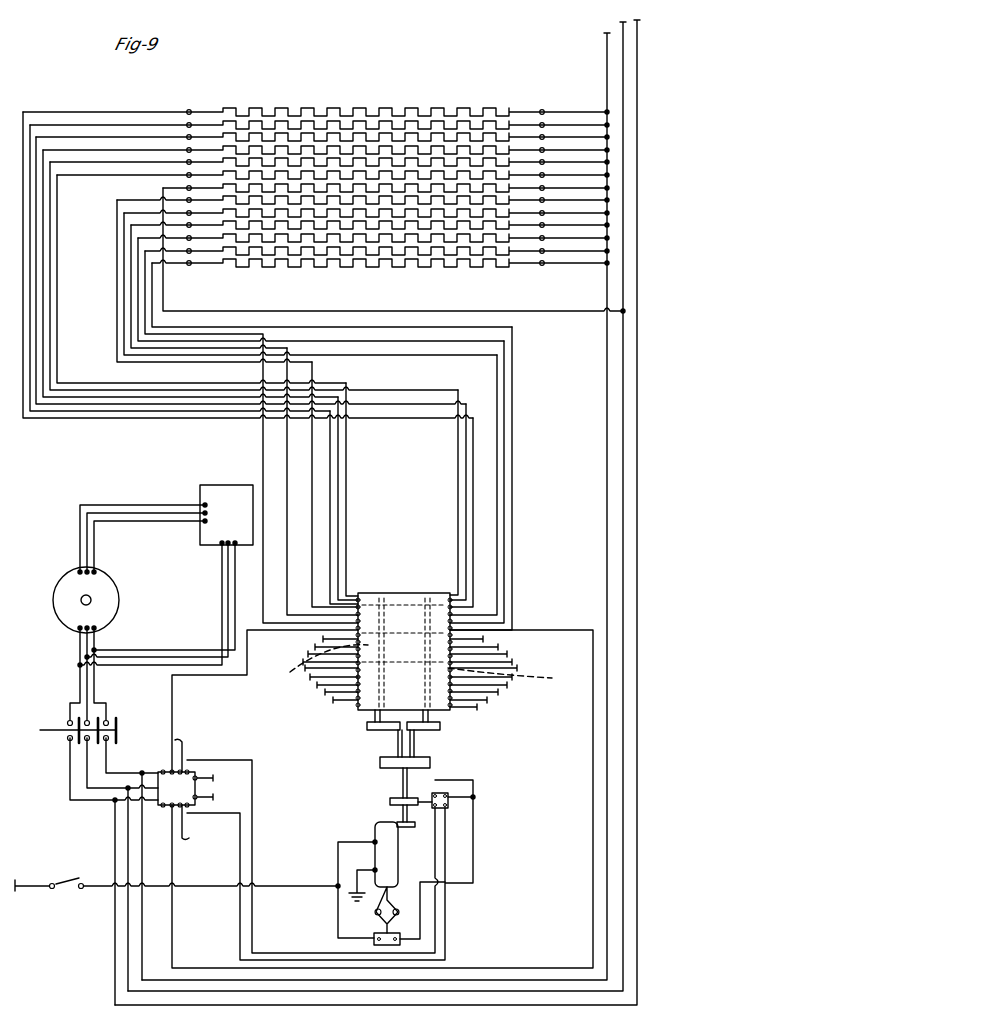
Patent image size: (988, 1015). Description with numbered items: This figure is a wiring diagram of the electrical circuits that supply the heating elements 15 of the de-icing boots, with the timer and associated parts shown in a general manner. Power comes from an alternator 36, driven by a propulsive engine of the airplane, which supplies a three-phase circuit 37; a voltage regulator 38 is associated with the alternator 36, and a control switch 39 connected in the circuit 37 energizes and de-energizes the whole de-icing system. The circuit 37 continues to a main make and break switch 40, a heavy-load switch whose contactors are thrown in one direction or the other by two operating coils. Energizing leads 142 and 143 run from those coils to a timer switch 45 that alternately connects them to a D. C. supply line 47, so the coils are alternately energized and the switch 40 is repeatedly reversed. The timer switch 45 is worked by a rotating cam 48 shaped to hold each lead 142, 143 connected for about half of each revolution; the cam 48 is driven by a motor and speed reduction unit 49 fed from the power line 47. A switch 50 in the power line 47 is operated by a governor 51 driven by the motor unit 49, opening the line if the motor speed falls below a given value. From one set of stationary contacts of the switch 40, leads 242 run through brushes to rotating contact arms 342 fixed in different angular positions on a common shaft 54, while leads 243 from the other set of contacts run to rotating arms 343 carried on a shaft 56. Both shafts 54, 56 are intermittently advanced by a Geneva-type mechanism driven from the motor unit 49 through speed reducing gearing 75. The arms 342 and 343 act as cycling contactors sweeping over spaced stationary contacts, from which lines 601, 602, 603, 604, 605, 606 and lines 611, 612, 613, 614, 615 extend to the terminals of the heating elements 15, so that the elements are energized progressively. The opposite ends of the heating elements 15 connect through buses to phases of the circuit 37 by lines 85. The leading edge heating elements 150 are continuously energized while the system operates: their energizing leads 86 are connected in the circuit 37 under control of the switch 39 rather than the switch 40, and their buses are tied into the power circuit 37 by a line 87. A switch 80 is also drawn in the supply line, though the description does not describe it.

The heating elements 15 is at (378, 136).
The leading edge heating elements 150 is at (233, 188).
The lines 85 is at (570, 262).
The energizing leads 86 is at (550, 316).
The line 87 is at (588, 191).
The alternator 36 is at (106, 611).
The three-phase circuit 37 is at (78, 693).
The voltage regulator 38 is at (218, 486).
The control switch 39 is at (110, 723).
The main make and break switch 40 is at (166, 772).
The timer switch 45 is at (449, 795).
The D. C. supply line 47 is at (280, 886).
The rotating cam 48 is at (390, 802).
The motor and speed reduction unit 49 is at (395, 869).
The switch 50 is at (400, 941).
The governor 51 is at (372, 912).
The shaft 54 is at (430, 714).
The shaft 56 is at (372, 716).
The speed reducing gearing 75 is at (432, 731).
The switch 80 is at (66, 889).
The energizing lead 142 is at (446, 839).
The energizing lead 143 is at (436, 858).
The leads 242 is at (592, 771).
The leads 243 is at (182, 742).
The rotating contact arms 342 is at (507, 673).
The rotating arms 343 is at (312, 669).
The line 601 is at (512, 558).
The line 602 is at (504, 539).
The line 603 is at (497, 523).
The line 604 is at (473, 498).
The line 605 is at (466, 482).
The line 606 is at (458, 462).
The line 611 is at (346, 530).
The line 612 is at (338, 548).
The line 613 is at (332, 569).
The line 614 is at (312, 433).
The line 615 is at (287, 455).